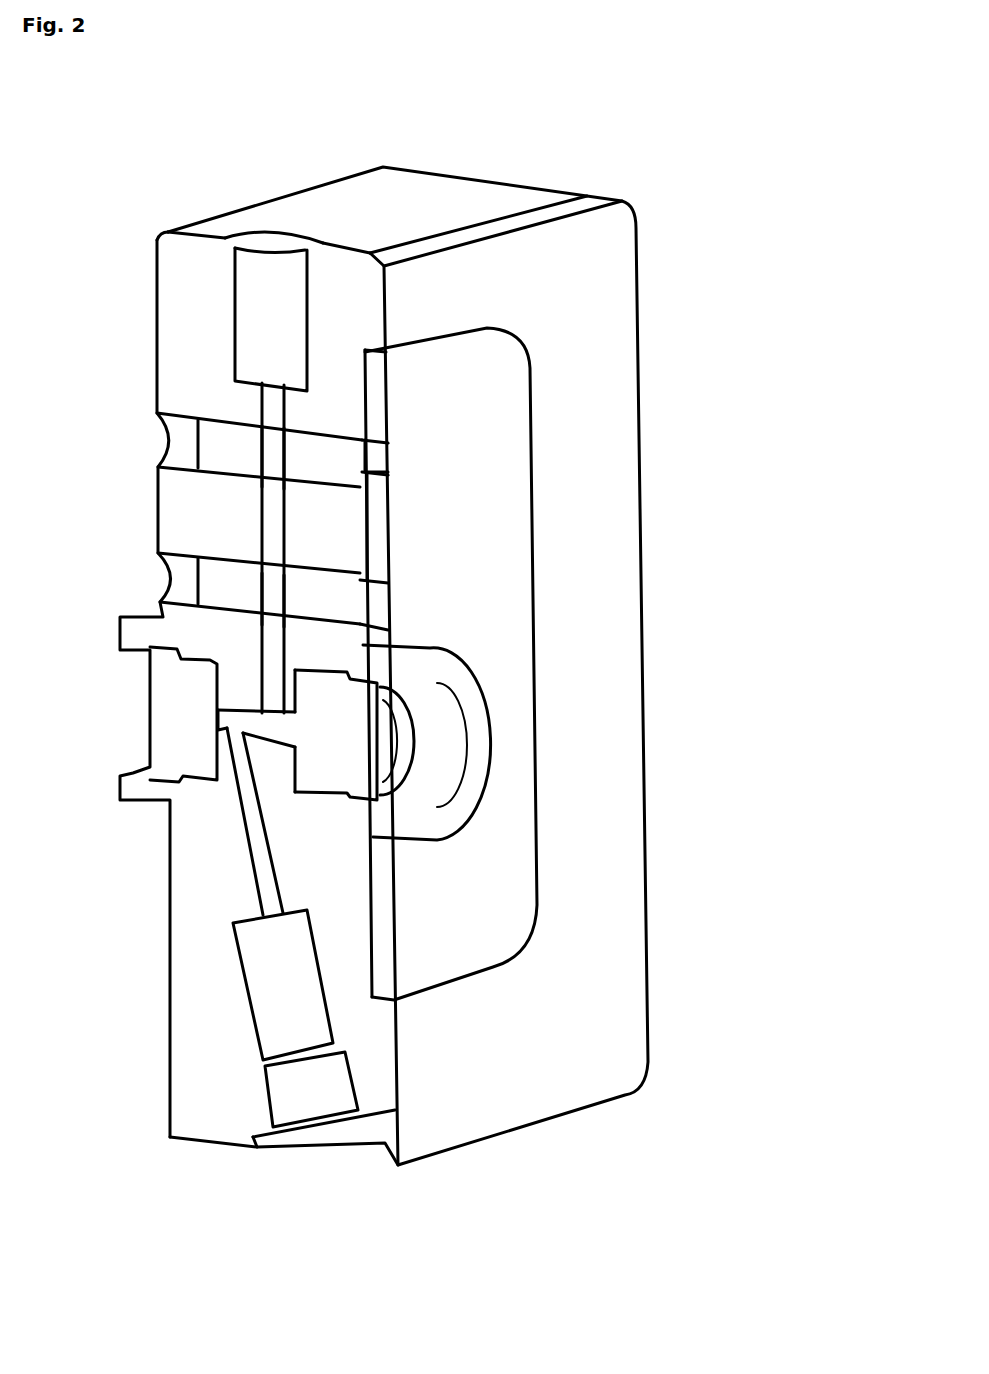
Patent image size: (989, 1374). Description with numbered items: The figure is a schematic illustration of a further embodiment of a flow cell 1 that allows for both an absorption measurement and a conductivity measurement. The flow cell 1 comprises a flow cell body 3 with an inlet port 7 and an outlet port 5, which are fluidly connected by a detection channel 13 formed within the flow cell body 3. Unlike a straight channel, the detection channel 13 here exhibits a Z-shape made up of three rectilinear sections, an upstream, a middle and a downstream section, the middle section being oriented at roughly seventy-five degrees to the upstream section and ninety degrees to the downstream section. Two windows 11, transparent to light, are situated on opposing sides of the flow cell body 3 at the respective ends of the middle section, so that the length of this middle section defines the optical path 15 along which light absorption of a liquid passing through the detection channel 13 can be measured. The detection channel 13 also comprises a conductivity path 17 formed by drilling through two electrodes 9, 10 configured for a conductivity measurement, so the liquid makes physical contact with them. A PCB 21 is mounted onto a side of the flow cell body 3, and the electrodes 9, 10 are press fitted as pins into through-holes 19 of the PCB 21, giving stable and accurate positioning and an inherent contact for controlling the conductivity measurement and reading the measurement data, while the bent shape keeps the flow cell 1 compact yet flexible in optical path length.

The flow cell 1 is at (640, 148).
The flow cell body 3 is at (596, 325).
The outlet port 5 is at (272, 257).
The inlet port 7 is at (335, 1160).
The electrode 9 is at (204, 447).
The electrode 10 is at (204, 576).
The windows 11 is at (153, 688).
The detection channel 13 is at (288, 533).
The optical path 15 is at (275, 725).
The conductivity path 17 is at (298, 455).
The through-holes 19 is at (400, 463).
The PCB 21 is at (500, 917).